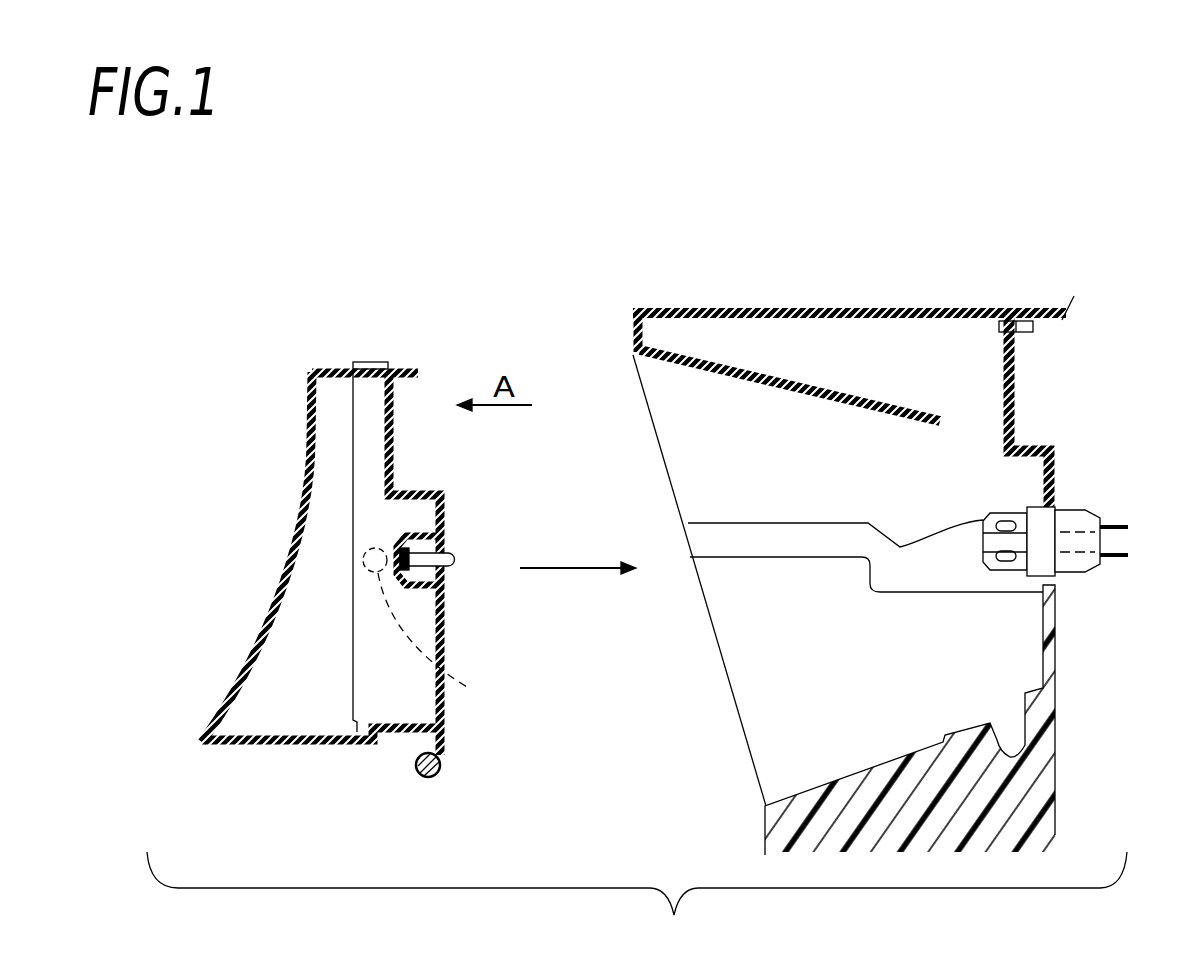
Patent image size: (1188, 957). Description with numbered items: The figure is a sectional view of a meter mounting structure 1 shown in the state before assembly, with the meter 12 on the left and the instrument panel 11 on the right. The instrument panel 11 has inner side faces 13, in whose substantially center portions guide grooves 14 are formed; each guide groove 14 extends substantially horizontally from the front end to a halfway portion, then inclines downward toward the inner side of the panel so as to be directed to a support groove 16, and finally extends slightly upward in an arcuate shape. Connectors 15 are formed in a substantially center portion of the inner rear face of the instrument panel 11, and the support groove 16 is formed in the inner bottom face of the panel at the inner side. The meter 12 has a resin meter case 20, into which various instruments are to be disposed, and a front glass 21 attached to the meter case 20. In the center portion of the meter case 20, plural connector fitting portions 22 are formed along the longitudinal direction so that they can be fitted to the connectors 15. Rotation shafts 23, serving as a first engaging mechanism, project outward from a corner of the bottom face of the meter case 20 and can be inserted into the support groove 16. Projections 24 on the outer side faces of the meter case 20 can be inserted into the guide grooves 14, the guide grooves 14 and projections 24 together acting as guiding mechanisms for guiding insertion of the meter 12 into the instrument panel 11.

The meter mounting structure 1 is at (545, 263).
The instrument panel 11 is at (801, 308).
The meter 12 is at (345, 364).
The inner side faces 13 is at (698, 418).
The guide grooves 14 is at (800, 542).
The connectors 15 is at (1010, 518).
The support groove 16 is at (1027, 738).
The meter case 20 is at (445, 613).
The front glass 21 is at (285, 563).
The connector fitting portions 22 is at (453, 552).
The rotation shafts 23 is at (427, 778).
The projections 24 is at (427, 633).